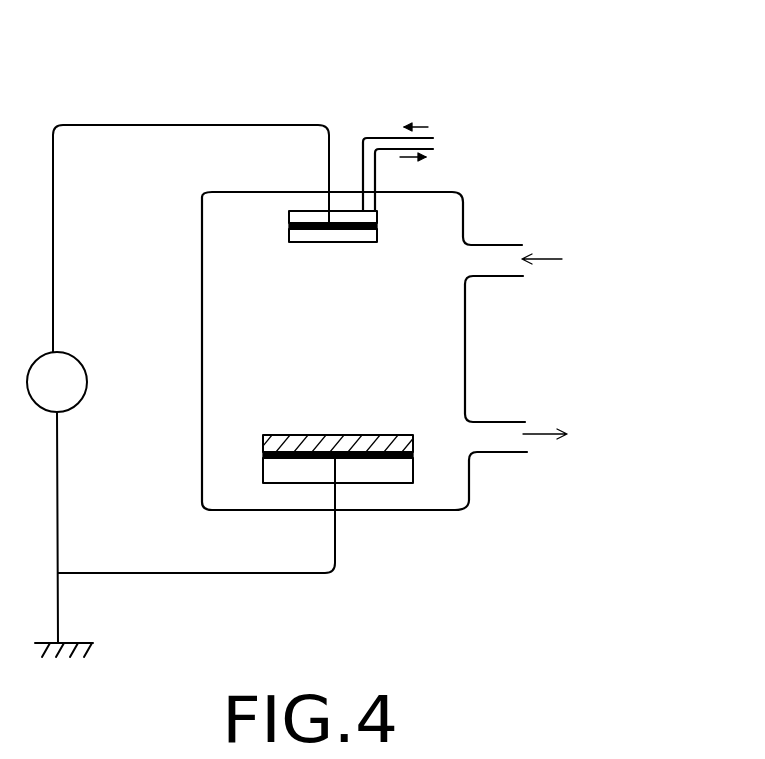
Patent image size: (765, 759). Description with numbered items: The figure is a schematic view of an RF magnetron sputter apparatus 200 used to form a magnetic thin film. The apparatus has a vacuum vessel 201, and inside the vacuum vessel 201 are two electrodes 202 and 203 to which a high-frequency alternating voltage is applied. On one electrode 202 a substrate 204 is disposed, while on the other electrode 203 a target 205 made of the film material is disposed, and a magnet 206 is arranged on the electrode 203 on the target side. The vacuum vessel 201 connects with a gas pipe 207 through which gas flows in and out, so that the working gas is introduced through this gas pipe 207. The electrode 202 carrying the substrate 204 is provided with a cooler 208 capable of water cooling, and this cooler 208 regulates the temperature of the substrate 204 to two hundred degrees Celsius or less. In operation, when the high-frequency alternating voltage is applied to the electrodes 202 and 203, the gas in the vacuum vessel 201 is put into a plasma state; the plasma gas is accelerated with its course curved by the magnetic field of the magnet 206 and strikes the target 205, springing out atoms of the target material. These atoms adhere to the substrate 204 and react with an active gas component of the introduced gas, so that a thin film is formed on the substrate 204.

The sputter apparatus 200 is at (551, 59).
The vacuum vessel 201 is at (469, 502).
The electrode 202 is at (377, 227).
The electrode 203 is at (372, 458).
The substrate 204 is at (368, 237).
The target 205 is at (402, 440).
The magnet 206 is at (355, 483).
The gas pipe 207 is at (503, 280).
The cooler 208 is at (367, 217).